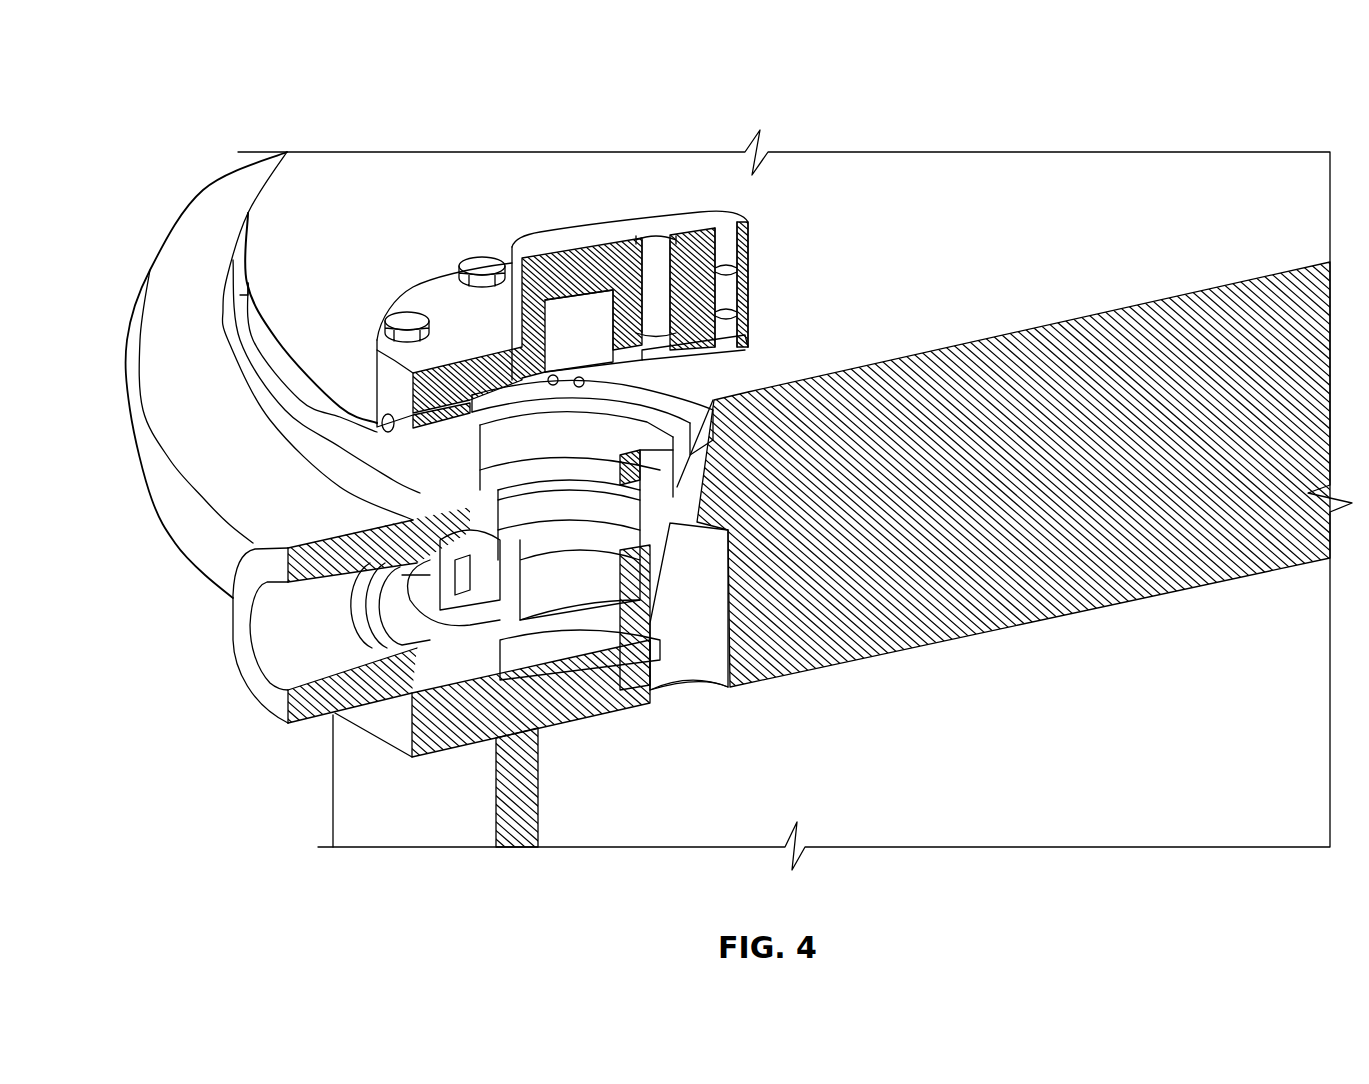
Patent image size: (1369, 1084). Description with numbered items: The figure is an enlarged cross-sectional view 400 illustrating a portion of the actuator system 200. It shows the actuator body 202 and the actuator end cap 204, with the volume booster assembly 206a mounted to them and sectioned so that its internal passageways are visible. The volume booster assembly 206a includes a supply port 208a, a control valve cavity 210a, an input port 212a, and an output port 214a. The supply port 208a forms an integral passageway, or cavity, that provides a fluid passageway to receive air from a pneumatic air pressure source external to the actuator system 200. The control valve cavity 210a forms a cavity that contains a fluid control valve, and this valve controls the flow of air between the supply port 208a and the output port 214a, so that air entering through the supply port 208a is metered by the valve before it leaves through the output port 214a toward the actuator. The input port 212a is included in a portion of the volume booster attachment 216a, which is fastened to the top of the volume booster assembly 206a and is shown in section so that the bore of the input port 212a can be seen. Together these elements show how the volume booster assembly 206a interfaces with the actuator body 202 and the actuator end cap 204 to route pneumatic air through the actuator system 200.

The enlarged cross-sectional view 400 is at (1192, 78).
The actuator system 200 is at (1016, 210).
The actuator body 202 is at (496, 800).
The actuator end cap 204 is at (1090, 612).
The volume booster assembly 206a is at (150, 505).
The supply port 208a is at (243, 633).
The control valve cavity 210a is at (735, 438).
The input port 212a is at (652, 245).
The output port 214a is at (688, 690).
The volume booster attachment 216a is at (372, 304).